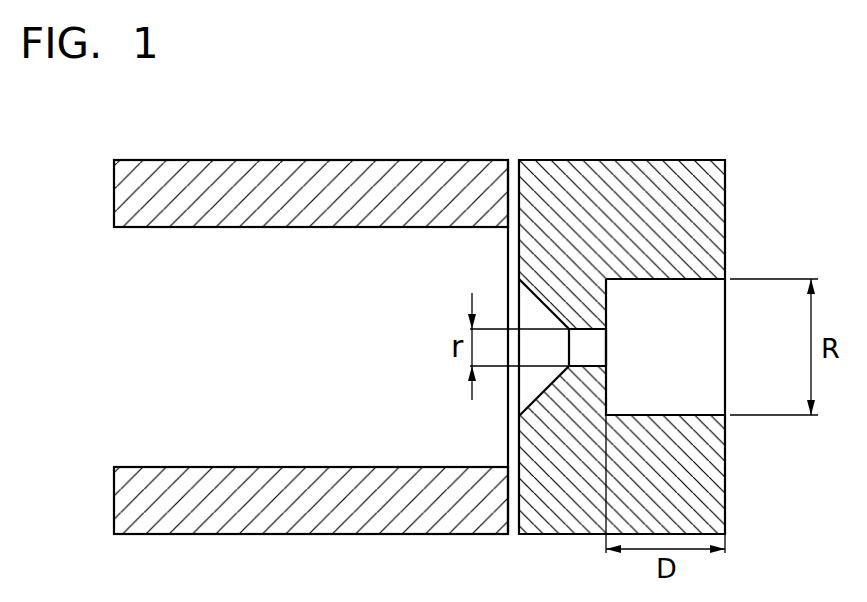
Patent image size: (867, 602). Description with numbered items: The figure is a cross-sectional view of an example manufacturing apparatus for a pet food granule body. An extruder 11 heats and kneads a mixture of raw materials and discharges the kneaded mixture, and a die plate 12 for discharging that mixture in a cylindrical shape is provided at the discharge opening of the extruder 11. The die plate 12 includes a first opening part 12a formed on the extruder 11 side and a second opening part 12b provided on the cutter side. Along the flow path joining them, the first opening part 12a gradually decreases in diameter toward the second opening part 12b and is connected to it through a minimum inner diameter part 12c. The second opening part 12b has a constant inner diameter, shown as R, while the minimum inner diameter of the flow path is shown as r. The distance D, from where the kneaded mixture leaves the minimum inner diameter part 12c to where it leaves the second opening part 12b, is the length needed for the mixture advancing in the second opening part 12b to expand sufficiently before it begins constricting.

The extruder 11 is at (280, 165).
The die plate 12 is at (617, 165).
The first opening part 12a is at (528, 407).
The second opening part 12b is at (685, 415).
The minimum inner diameter part 12c is at (606, 347).